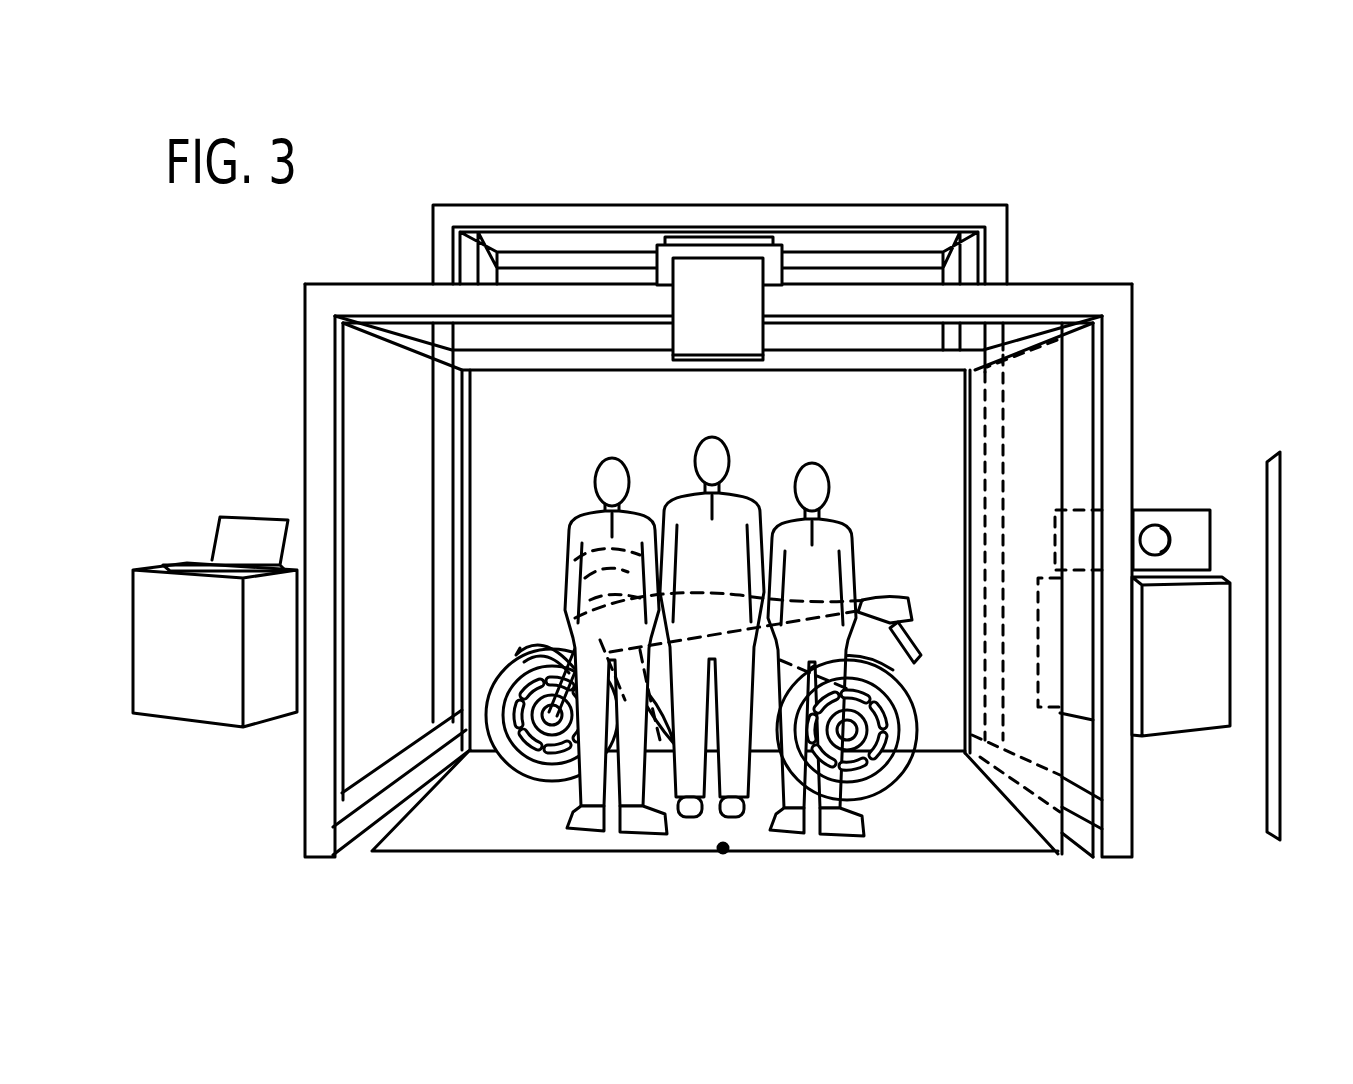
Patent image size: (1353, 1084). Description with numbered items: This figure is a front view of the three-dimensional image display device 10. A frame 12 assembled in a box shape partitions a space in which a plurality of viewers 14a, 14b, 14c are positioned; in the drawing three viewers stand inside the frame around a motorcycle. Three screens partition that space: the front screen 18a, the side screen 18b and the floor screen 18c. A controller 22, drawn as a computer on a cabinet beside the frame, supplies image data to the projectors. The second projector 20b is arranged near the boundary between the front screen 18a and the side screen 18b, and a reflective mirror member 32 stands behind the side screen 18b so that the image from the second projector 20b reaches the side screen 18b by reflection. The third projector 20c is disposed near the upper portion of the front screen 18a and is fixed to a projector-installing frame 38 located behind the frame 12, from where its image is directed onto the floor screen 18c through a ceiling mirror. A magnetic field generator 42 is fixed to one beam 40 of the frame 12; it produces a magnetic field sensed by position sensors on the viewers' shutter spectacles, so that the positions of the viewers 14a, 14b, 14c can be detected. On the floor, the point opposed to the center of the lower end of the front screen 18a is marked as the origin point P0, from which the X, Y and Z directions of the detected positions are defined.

The 3-dimensional image display device 10 is at (1015, 180).
The frame 12 is at (1110, 287).
The viewer 14a is at (608, 468).
The viewer 14b is at (712, 445).
The viewer 14c is at (813, 466).
The front screen 18a is at (492, 456).
The side screen 18b is at (1040, 395).
The floor screen 18c is at (415, 823).
The second projector 20b is at (1173, 510).
The third projector 20c is at (712, 250).
The controller 22 is at (248, 517).
The reflective mirror member 32 is at (1266, 779).
The projector-installing frame 38 is at (577, 194).
The beam 40 is at (1078, 285).
The magnetic field generator 42 is at (682, 272).
The origin point P0 is at (722, 888).